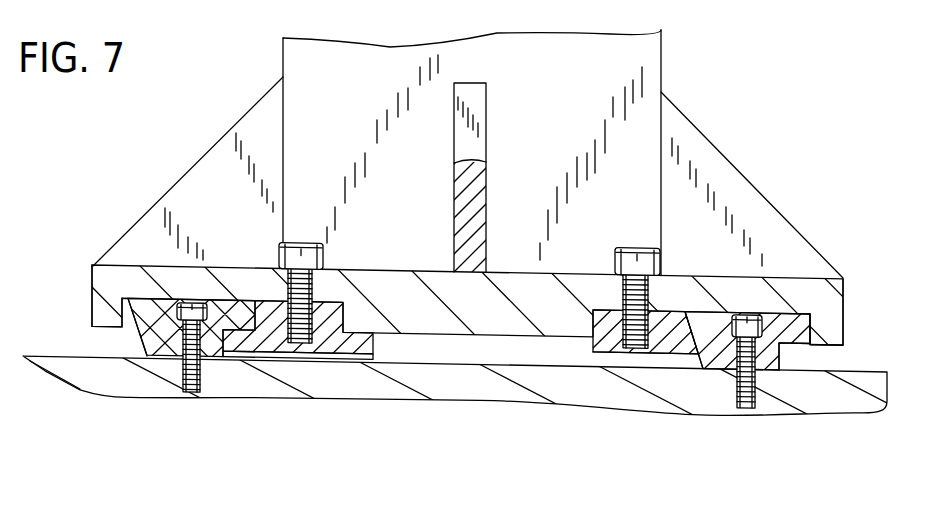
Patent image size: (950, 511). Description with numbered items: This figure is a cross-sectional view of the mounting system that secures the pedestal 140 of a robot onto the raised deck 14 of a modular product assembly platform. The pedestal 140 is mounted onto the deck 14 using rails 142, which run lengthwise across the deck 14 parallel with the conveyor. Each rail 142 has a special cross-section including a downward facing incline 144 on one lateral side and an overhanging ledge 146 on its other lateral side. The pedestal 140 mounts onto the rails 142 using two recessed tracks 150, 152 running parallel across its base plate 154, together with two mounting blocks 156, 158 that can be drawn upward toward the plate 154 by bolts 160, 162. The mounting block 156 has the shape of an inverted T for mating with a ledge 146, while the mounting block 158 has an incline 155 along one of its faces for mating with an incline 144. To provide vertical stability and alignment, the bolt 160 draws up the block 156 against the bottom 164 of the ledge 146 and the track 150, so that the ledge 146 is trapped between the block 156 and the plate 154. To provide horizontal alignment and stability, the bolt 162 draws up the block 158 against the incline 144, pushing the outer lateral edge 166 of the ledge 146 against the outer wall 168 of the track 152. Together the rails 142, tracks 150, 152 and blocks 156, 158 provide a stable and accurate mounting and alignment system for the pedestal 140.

The deck 14 is at (433, 412).
The pedestal 140 is at (580, 99).
The rail 142 is at (162, 370).
The downward facing incline 144 is at (128, 340).
The overhanging ledge 146 is at (243, 299).
The recessed track 150 is at (135, 288).
The recessed track 152 is at (781, 300).
The base plate 154 is at (495, 317).
The incline 155 is at (695, 332).
The mounting block 156 is at (343, 372).
The mounting block 158 is at (604, 372).
The bolt 160 is at (300, 243).
The bolt 162 is at (630, 250).
The bottom of the ledge 164 is at (258, 313).
The outer lateral edge of the ledge 166 is at (807, 327).
The outer wall of the track 168 is at (831, 346).